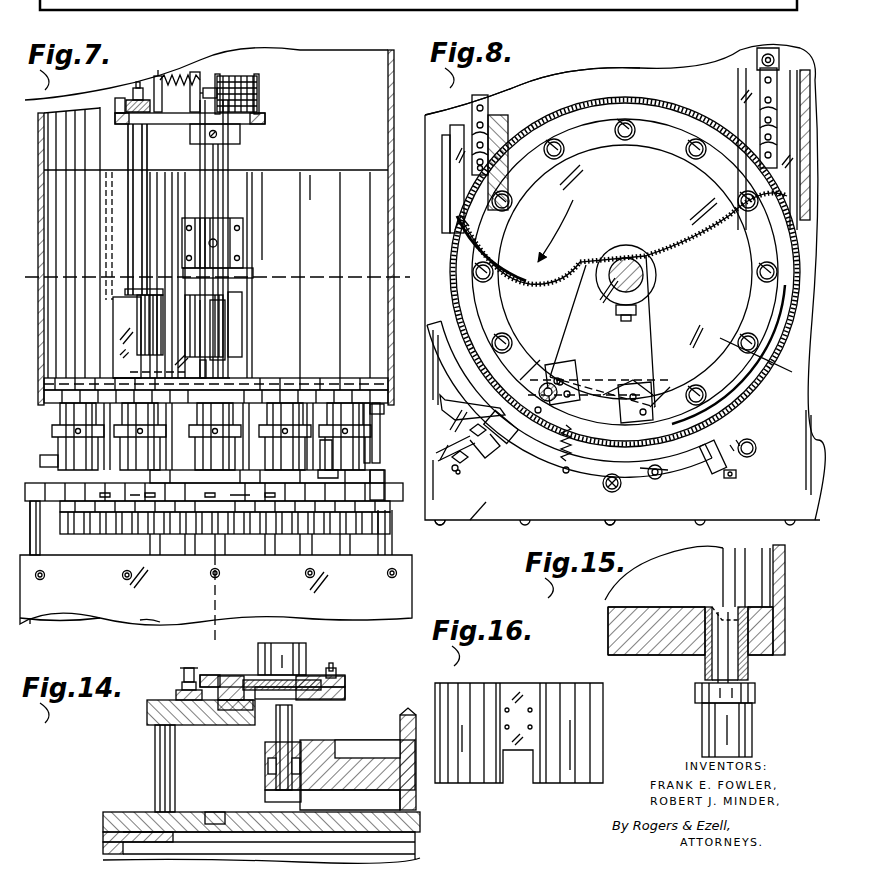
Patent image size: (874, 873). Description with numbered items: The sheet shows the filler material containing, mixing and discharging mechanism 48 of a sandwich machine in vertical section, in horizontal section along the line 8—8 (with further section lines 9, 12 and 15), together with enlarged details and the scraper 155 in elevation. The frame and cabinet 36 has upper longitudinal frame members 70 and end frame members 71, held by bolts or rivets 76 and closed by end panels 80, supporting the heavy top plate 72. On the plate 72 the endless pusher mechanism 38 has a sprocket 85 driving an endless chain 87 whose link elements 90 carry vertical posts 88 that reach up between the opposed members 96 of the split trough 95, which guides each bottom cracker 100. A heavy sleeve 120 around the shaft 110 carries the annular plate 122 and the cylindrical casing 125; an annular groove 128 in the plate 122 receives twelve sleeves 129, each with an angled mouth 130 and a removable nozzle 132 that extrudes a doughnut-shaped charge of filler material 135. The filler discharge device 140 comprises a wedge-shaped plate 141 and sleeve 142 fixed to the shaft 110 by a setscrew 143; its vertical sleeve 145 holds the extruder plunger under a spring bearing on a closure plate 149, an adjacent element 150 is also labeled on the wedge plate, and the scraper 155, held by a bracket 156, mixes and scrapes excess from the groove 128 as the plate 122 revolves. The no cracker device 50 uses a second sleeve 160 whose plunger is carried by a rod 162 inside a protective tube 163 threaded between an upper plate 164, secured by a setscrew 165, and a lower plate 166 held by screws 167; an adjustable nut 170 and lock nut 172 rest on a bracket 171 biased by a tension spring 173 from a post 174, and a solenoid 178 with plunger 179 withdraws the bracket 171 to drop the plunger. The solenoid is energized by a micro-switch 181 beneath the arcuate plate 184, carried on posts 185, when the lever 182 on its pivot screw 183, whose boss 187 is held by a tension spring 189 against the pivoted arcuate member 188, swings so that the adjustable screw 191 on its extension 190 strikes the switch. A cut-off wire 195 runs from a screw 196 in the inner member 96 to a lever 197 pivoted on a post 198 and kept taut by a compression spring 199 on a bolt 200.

In FIG. 7, the section line 8— 8 is at (25, 292).
In FIG. 8, the section line 9— 9 is at (541, 363).
In FIG. 7, the section line 12— 12 is at (26, 466).
In FIG. 8, the section line 15— 15 is at (731, 316).
In FIG. 7, the supporting frame and cabinet 36 is at (124, 633).
In FIG. 14, the supporting frame and cabinet 36 is at (420, 830).
In FIG. 8, the endless pusher mechanism 38 is at (755, 52).
In FIG. 8, the filler material containing, mixing and discharging mechanism 48 is at (652, 162).
In FIG. 15, the filler material containing, mixing and discharging mechanism 48 is at (603, 612).
In FIG. 8, the no cracker device 50 is at (496, 515).
In FIG. 14, the upper longitudinal frame members 70 is at (212, 814).
In FIG. 14, the upper end frame members 71 is at (104, 845).
In FIG. 7, the top plate 72 is at (372, 560).
In FIG. 8, the top plate 72 is at (620, 66).
In FIG. 14, the top plate 72 is at (130, 812).
In FIG. 7, the bolts or rivets 76 is at (219, 578).
In FIG. 8, the bolts or rivets 76 is at (615, 526).
In FIG. 7, the end panels 80 is at (142, 628).
In FIG. 14, the end panels 80 is at (104, 834).
In FIG. 7, the sprocket 85 is at (305, 530).
In FIG. 14, the sprocket 85 is at (386, 792).
In FIG. 7, the endless chain 87 is at (320, 485).
In FIG. 8, the endless chain 87 is at (498, 96).
In FIG. 14, the endless chain 87 is at (272, 794).
In FIG. 7, the posts 88 is at (376, 505).
In FIG. 8, the posts 88 is at (775, 56).
In FIG. 14, the posts 88 is at (278, 732).
In FIG. 8, the link elements 90 is at (455, 158).
In FIG. 14, the link elements 90 is at (268, 758).
In FIG. 8, the split trough 95 is at (502, 112).
In FIG. 14, the split trough 95 is at (348, 686).
In FIG. 8, the trough members 96 is at (464, 128).
In FIG. 14, the trough members 96 is at (253, 706).
In FIG. 14, the bottom cracker 100 is at (285, 692).
In FIG. 7, the shaft 110 is at (232, 162).
In FIG. 8, the shaft 110 is at (627, 258).
In FIG. 7, the sleeve 120 is at (262, 405).
In FIG. 14, the sleeve 120 is at (418, 700).
In FIG. 7, the plate 122 is at (302, 395).
In FIG. 8, the plate 122 is at (640, 98).
In FIG. 15, the plate 122 is at (608, 650).
In FIG. 8, the cylindrical casing 125 is at (712, 120).
In FIG. 15, the cylindrical casing 125 is at (790, 600).
In FIG. 8, the annular groove 128 is at (600, 114).
In FIG. 15, the annular groove 128 is at (718, 606).
In FIG. 7, the sleeves 129 is at (338, 405).
In FIG. 8, the sleeves 129 is at (550, 140).
In FIG. 15, the sleeves 129 is at (707, 672).
In FIG. 8, the mouth 130 is at (615, 140).
In FIG. 15, the mouth 130 is at (712, 612).
In FIG. 7, the nozzle 132 is at (340, 395).
In FIG. 15, the nozzle 132 is at (712, 730).
In FIG. 14, the nozzle 132 is at (285, 655).
In FIG. 14, the filler material 135 is at (336, 668).
In FIG. 7, the filler discharge device 140 is at (112, 350).
In FIG. 8, the filler discharge device 140 is at (662, 312).
In FIG. 7, the plate 141 is at (145, 363).
In FIG. 8, the plate 141 is at (657, 345).
In FIG. 7, the sleeve 142 is at (226, 306).
In FIG. 8, the sleeve 142 is at (657, 276).
In FIG. 8, the setscrew 143 is at (626, 318).
In FIG. 7, the sleeve 145 is at (223, 322).
In FIG. 7, the closure plate 149 is at (242, 298).
In FIG. 8, the closure plate 149 is at (652, 398).
In FIG. 7, the plate 150 is at (252, 274).
In FIG. 8, the plate 150 is at (634, 362).
In FIG. 7, the scraper 155 is at (316, 185).
In FIG. 8, the scraper 155 is at (690, 213).
In FIG. 16, the scraper 155 is at (516, 786).
In FIG. 7, the bracket 156 is at (244, 236).
In FIG. 7, the second sleeve 160 is at (125, 328).
In FIG. 7, the rod 162 is at (122, 113).
In FIG. 8, the rod 162 is at (550, 382).
In FIG. 7, the protective tube 163 is at (135, 200).
In FIG. 8, the protective tube 163 is at (498, 416).
In FIG. 7, the plate 164 is at (265, 118).
In FIG. 7, the setscrew 165 is at (241, 133).
In FIG. 7, the plate 166 is at (137, 303).
In FIG. 7, the screws 167 is at (127, 292).
In FIG. 8, the screws 167 is at (560, 378).
In FIG. 7, the adjustable nut 170 is at (126, 106).
In FIG. 7, the bracket 171 is at (176, 124).
In FIG. 7, the lock nut 172 is at (133, 94).
In FIG. 7, the tension spring 173 is at (186, 76).
In FIG. 7, the post 174 is at (158, 72).
In FIG. 7, the solenoid 178 is at (256, 84).
In FIG. 7, the plunger 179 is at (205, 88).
In FIG. 7, the micro-switch 181 is at (90, 503).
In FIG. 7, the lever 182 is at (135, 532).
In FIG. 8, the lever 182 is at (520, 466).
In FIG. 7, the pivot screw 183 is at (210, 390).
In FIG. 8, the pivot screw 183 is at (604, 488).
In FIG. 7, the arcuate plate 184 is at (58, 515).
In FIG. 14, the arcuate plate 184 is at (147, 712).
In FIG. 7, the posts 185 is at (397, 573).
In FIG. 14, the posts 185 is at (158, 760).
In FIG. 8, the boss 187 is at (492, 404).
In FIG. 7, the arcuate member 188 is at (68, 470).
In FIG. 8, the tension spring 189 is at (566, 462).
In FIG. 8, the extension 190 is at (470, 430).
In FIG. 8, the adjustable screw 191 is at (455, 474).
In FIG. 8, the cut-off wire 195 is at (656, 480).
In FIG. 14, the cut-off wire 195 is at (206, 676).
In FIG. 14, the screw 196 is at (336, 672).
In FIG. 7, the lever 197 is at (322, 480).
In FIG. 8, the lever 197 is at (718, 470).
In FIG. 14, the lever 197 is at (176, 694).
In FIG. 7, the post 198 is at (380, 412).
In FIG. 8, the post 198 is at (750, 458).
In FIG. 8, the compression spring 199 is at (735, 446).
In FIG. 8, the bolt 200 is at (735, 480).